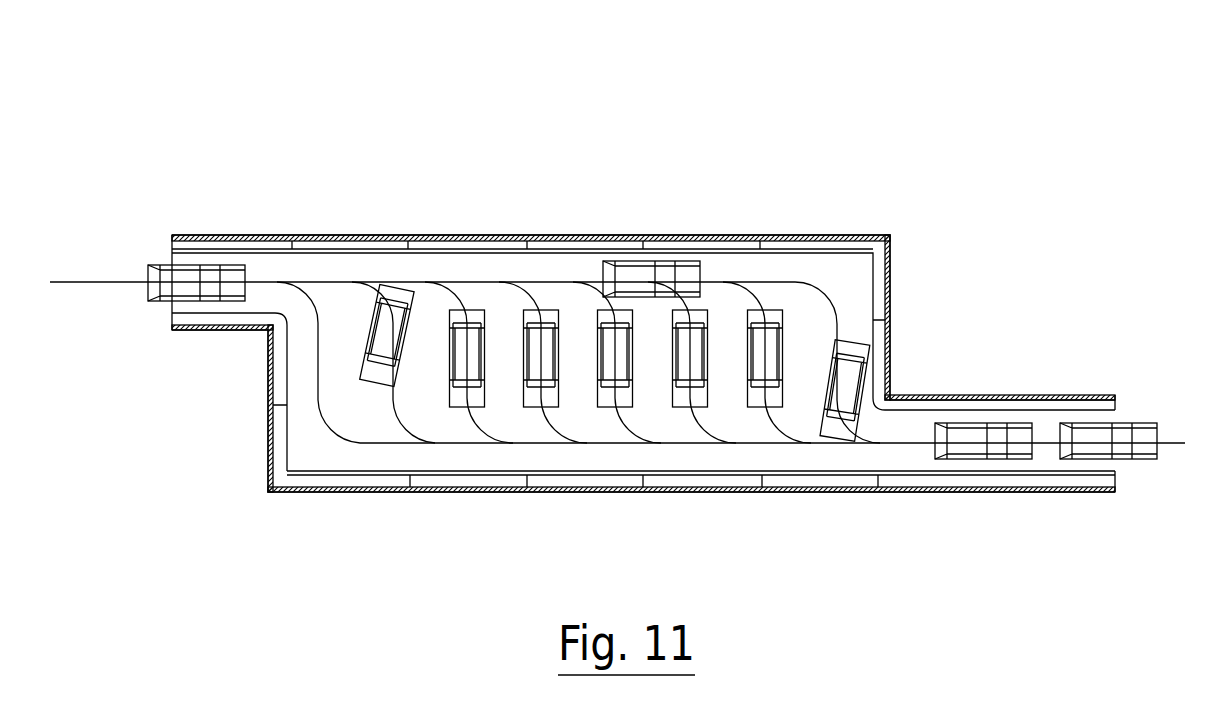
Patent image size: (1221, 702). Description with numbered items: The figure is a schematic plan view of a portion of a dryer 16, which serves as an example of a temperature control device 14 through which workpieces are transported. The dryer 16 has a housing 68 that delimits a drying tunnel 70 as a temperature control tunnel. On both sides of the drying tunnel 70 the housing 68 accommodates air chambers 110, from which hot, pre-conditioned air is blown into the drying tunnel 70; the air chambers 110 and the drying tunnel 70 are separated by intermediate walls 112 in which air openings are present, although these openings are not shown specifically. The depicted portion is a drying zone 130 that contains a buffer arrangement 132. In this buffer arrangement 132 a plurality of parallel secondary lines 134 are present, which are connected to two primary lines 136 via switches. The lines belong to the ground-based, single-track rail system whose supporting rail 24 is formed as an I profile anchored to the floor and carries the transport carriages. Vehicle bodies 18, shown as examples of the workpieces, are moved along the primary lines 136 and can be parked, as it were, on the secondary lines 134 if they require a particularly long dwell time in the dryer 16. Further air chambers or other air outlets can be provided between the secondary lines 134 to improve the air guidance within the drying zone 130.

The drying zone 130 is at (311, 160).
The supporting rail 24 is at (101, 280).
The drying tunnel 70 is at (337, 267).
The housing 68 is at (397, 237).
The intermediate wall 112 is at (453, 237).
The air chamber 110 is at (522, 238).
The buffer arrangement 132 is at (565, 270).
The primary line 136 is at (748, 275).
The temperature control device 14 is at (830, 168).
The dryer 16 is at (885, 172).
The secondary line 134 is at (837, 312).
The vehicle body 18 is at (185, 292).